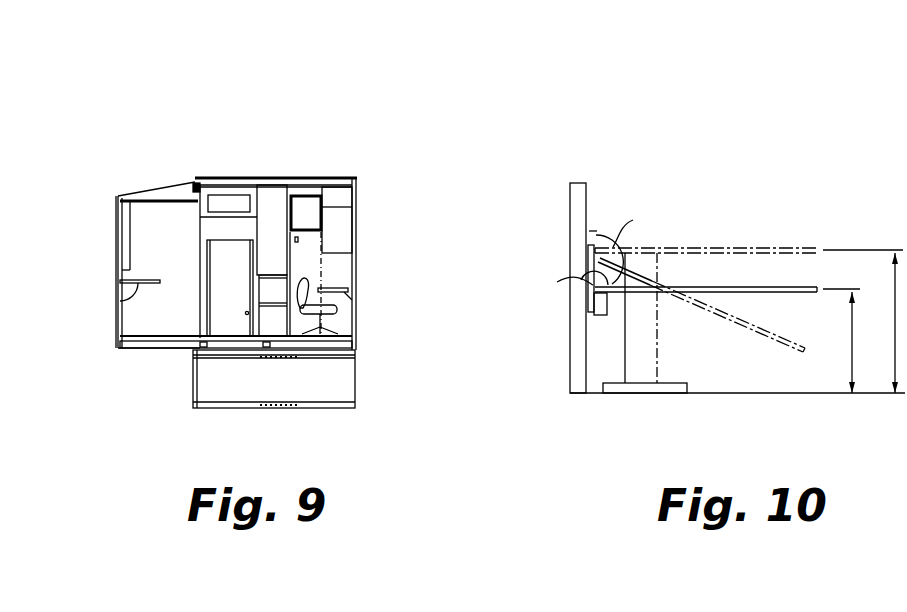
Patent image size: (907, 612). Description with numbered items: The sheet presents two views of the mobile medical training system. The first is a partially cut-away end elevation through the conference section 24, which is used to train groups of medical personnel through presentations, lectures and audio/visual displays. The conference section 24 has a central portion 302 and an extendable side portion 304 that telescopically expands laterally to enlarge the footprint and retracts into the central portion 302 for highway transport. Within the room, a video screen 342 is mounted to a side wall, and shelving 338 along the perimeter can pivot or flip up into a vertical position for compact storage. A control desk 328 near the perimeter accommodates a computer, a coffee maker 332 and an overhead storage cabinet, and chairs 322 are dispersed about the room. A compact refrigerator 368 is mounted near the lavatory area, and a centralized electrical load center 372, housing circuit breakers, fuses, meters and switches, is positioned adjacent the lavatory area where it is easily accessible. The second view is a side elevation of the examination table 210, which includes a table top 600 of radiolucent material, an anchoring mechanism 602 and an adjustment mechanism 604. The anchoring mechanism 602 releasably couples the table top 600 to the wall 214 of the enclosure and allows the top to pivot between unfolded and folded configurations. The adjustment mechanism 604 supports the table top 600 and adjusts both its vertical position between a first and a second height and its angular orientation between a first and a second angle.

In FIG. 9, the conference section 24 is at (180, 96).
In FIG. 9, the central portion 302 is at (331, 170).
In FIG. 9, the extendable side portion 304 is at (152, 179).
In FIG. 9, the video screen 342 is at (113, 233).
In FIG. 9, the shelving 338 is at (137, 295).
In FIG. 9, the compact refrigerator 368 is at (300, 203).
In FIG. 9, the coffee maker 332 is at (348, 223).
In FIG. 9, the centralized electrical load center 372 is at (310, 262).
In FIG. 9, the control desk 328 is at (342, 288).
In FIG. 9, the chairs 322 is at (335, 308).
In FIG. 10, the examination table 210 is at (775, 186).
In FIG. 10, the wall 214 is at (568, 222).
In FIG. 10, the table top 600 is at (713, 285).
In FIG. 10, the anchoring mechanism 602 is at (598, 324).
In FIG. 10, the adjustment mechanism 604 is at (660, 345).